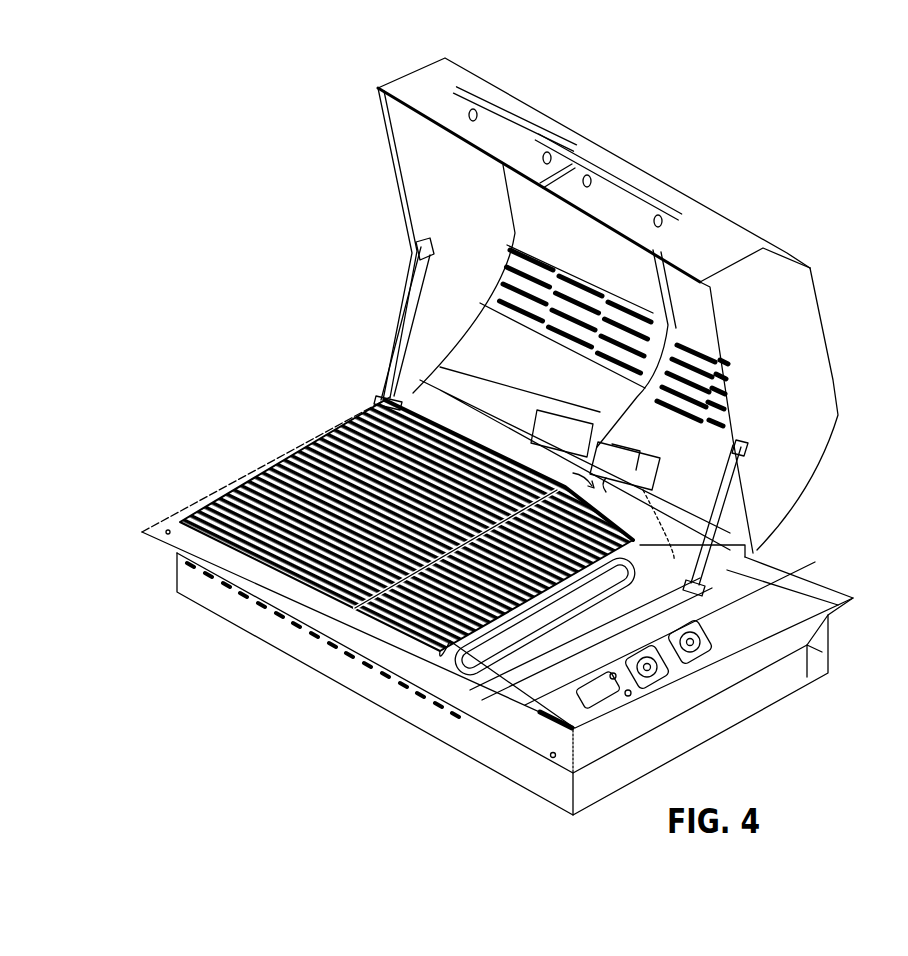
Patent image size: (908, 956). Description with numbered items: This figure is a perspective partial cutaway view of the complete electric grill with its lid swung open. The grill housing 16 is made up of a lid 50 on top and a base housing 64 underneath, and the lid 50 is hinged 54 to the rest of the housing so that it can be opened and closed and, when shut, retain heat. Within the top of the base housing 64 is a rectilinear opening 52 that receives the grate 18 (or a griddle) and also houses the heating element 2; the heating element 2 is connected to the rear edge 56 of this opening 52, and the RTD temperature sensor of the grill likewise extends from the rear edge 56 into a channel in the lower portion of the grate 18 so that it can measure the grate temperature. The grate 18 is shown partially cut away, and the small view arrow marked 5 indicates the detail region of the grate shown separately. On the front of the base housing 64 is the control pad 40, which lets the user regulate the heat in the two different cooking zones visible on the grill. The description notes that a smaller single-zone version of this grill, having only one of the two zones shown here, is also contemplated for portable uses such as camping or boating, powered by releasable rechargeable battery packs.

The heating element 2 is at (450, 663).
The view direction indicator (FIG. 5) 5 is at (582, 475).
The grill housing 16 is at (711, 197).
The grate 18 is at (243, 497).
The control pad 40 is at (583, 720).
The lid 50 is at (803, 440).
The opening 52 is at (437, 675).
The hinge 54 is at (428, 352).
The rear edge 56 is at (757, 553).
The base housing 64 is at (773, 706).